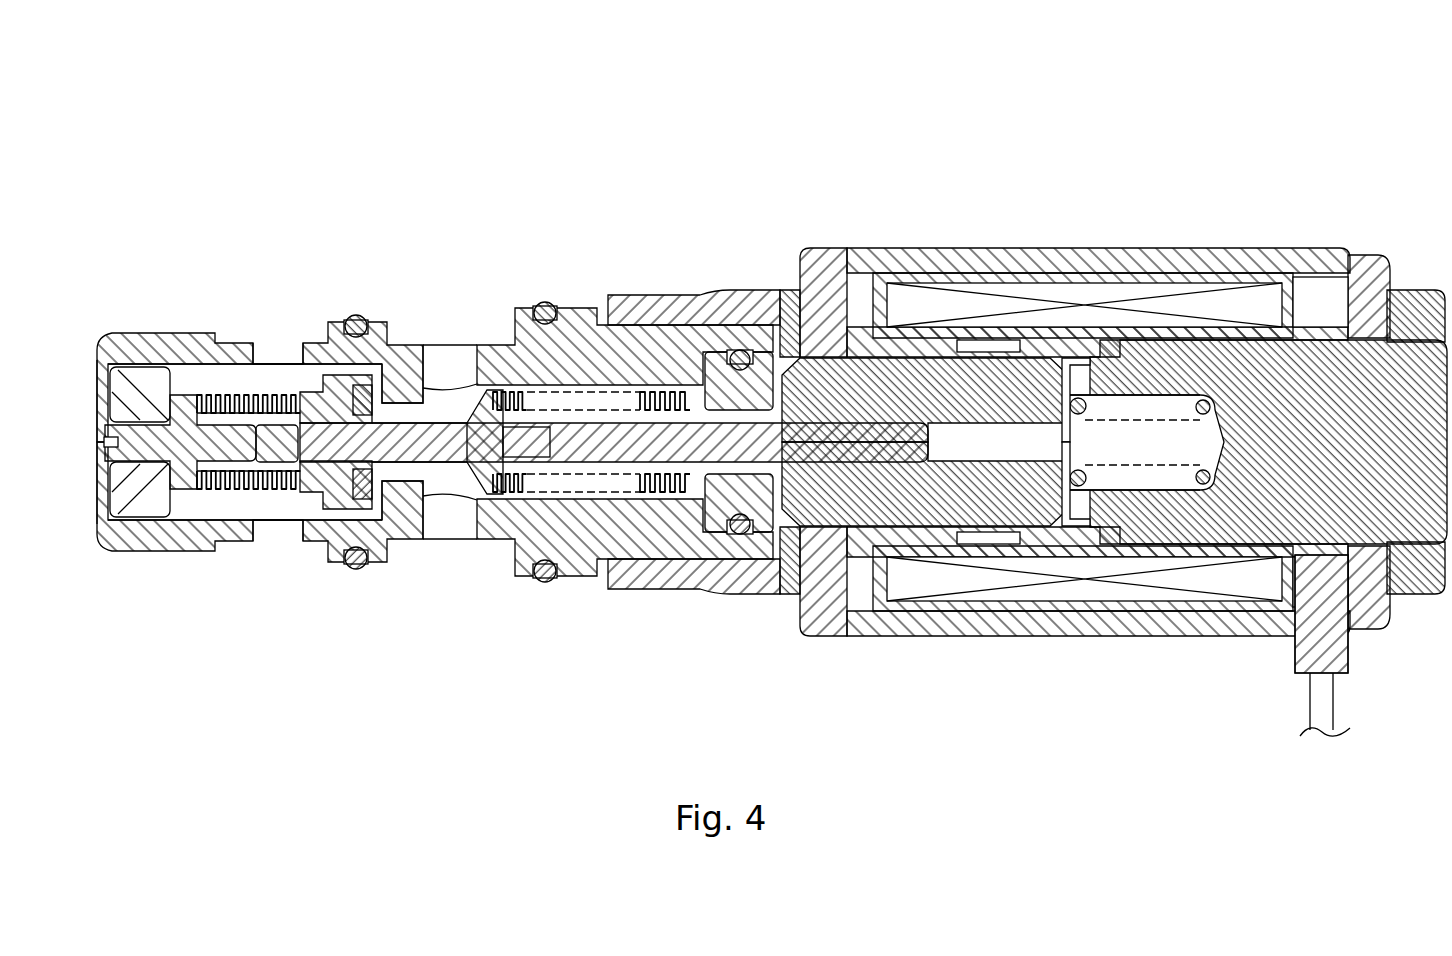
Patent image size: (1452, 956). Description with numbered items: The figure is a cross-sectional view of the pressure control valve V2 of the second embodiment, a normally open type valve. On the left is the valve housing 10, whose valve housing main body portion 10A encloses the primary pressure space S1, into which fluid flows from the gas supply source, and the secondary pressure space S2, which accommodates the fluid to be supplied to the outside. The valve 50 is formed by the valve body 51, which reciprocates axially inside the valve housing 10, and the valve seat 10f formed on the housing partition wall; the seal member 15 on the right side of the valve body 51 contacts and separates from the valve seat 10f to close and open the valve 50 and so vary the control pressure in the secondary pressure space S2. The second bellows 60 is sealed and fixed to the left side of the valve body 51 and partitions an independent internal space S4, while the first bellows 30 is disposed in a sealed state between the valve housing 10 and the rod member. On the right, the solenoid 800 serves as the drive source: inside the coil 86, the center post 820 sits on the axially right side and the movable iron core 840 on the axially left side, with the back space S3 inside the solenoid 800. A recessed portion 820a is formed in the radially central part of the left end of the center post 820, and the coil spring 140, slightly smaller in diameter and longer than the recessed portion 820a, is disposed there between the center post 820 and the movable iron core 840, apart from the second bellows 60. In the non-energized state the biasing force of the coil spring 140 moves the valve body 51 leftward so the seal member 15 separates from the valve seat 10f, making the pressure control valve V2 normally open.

The pressure control valve V2 is at (764, 387).
The valve housing 10 is at (182, 555).
The valve housing main body portion 10A is at (118, 527).
The valve seat 10f is at (398, 542).
The seal member 15 is at (398, 380).
The first bellows 30 is at (651, 507).
The valve 50 is at (349, 517).
The valve body 51 is at (340, 520).
The second bellows 60 is at (240, 391).
The coil 86 is at (930, 585).
The coil spring 140 is at (1073, 512).
The solenoid 800 is at (1033, 246).
The center post 820 is at (1257, 434).
The recessed portion 820a is at (1138, 476).
The movable iron core 840 is at (840, 498).
The primary pressure space S1 is at (447, 480).
The secondary pressure space S2 is at (218, 503).
The back space S3 is at (1170, 443).
The internal space S4 is at (272, 487).